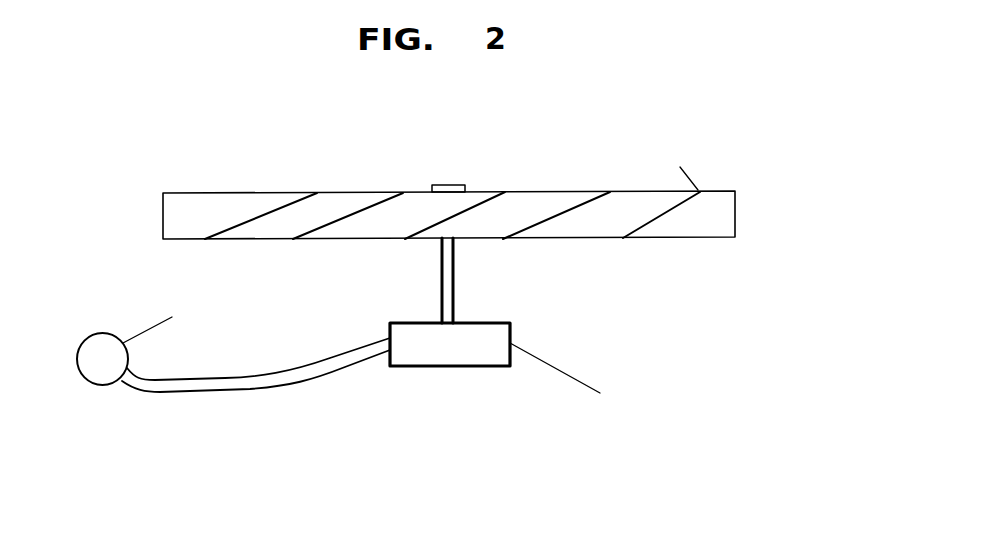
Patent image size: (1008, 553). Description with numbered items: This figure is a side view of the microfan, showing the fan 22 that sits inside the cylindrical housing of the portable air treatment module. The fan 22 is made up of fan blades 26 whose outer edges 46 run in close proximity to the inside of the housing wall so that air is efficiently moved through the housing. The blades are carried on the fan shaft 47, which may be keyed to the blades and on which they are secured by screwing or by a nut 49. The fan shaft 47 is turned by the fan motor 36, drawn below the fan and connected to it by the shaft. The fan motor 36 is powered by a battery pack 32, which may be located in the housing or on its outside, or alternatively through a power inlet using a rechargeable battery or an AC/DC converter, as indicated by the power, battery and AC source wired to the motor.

The fan 22 is at (545, 152).
The fan blades outer edges 46 is at (452, 218).
The nut 49 is at (450, 186).
The fan shaft 47 is at (440, 260).
The fan motor 36 is at (490, 340).
The battery pack 32 is at (122, 382).
The fan blades 26 is at (675, 283).